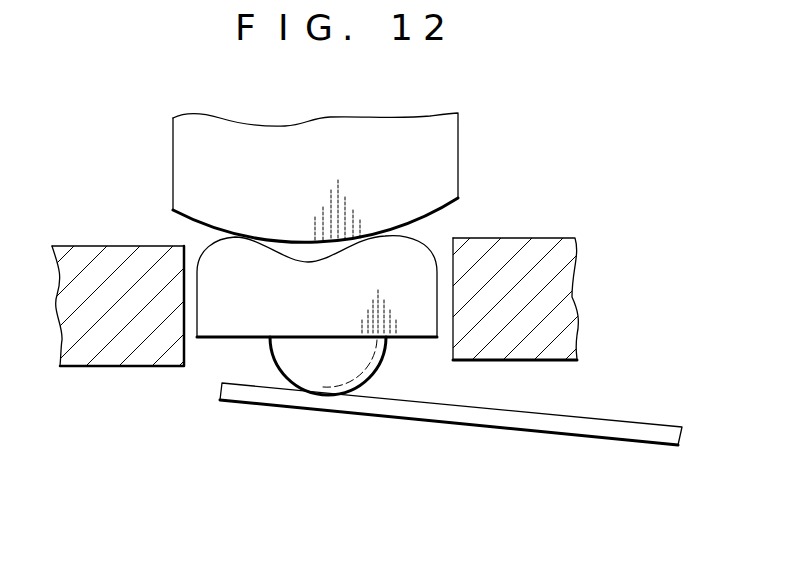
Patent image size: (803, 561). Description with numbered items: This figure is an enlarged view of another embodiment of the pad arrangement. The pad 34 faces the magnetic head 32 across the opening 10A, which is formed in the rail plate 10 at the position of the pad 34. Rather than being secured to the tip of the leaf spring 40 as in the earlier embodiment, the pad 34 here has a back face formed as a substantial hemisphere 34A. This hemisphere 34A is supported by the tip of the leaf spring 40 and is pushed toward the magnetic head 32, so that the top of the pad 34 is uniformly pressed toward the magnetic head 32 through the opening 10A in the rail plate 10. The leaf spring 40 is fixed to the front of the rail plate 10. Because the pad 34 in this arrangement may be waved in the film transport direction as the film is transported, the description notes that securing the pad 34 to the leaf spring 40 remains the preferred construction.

The magnetic head 32 is at (445, 153).
The pad 34 is at (215, 310).
The substantial hemisphere 34A is at (308, 372).
The leaf spring 40 is at (513, 420).
The rail plate 10 is at (537, 245).
The opening 10A is at (452, 255).